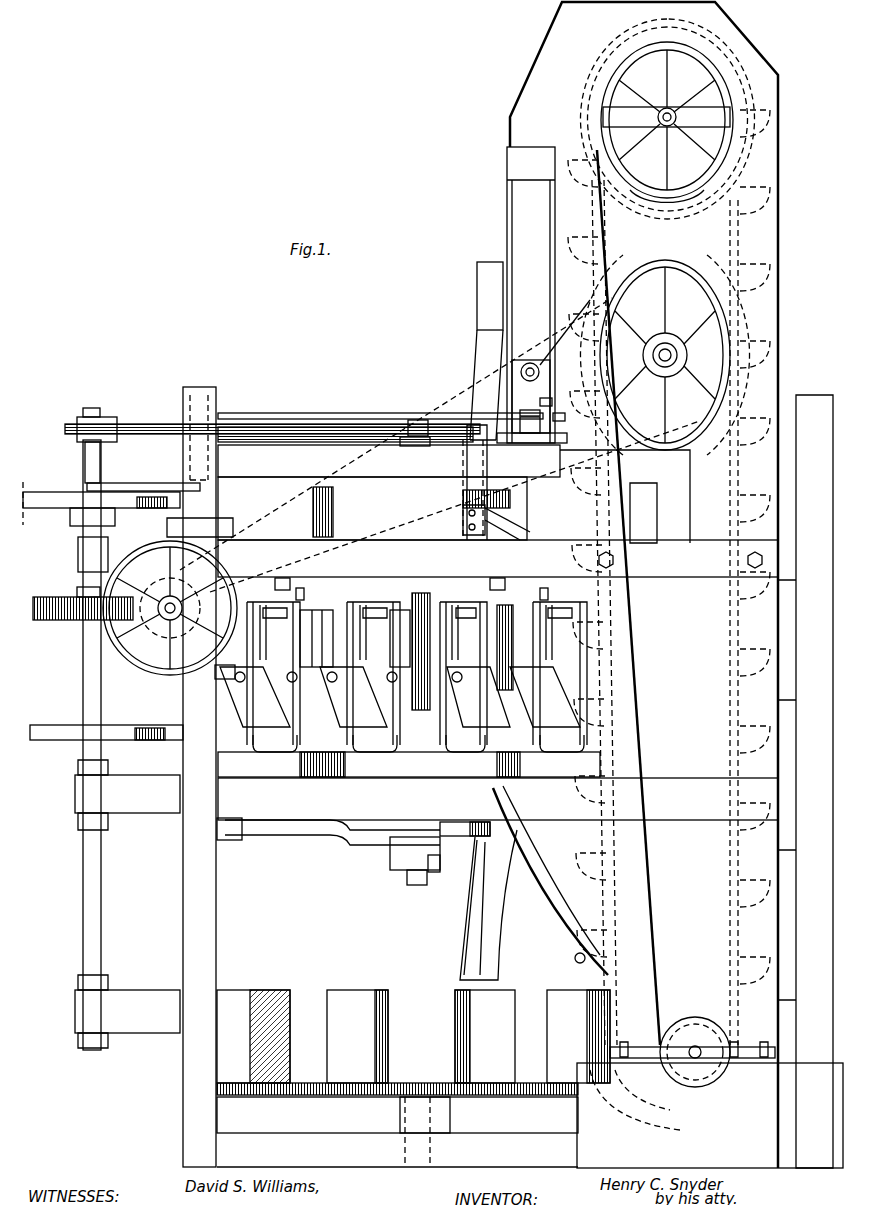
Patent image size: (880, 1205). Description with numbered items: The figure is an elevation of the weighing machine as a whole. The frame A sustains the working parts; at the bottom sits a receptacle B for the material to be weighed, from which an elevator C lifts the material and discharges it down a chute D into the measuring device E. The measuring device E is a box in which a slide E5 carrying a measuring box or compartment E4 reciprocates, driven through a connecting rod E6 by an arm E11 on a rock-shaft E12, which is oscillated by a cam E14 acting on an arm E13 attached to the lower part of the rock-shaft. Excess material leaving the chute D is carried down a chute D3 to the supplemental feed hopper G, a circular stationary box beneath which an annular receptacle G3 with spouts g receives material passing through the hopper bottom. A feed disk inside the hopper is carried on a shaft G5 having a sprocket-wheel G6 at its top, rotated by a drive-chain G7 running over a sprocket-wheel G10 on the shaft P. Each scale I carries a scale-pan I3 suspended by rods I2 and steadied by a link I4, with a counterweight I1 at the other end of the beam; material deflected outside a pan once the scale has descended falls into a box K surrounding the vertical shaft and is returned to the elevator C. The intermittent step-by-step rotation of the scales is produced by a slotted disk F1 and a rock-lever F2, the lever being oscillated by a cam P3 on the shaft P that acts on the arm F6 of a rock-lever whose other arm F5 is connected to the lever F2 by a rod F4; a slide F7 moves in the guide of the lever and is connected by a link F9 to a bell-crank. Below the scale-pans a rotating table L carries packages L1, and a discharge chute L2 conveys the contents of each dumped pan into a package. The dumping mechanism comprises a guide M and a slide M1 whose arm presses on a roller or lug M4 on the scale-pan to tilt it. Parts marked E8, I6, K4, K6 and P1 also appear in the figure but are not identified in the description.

The frame A is at (175, 888).
The receptacle B is at (710, 1092).
The elevator C is at (669, 526).
The chute D is at (531, 295).
The chute D3 is at (485, 296).
The measuring device E is at (512, 395).
The measuring box E4 is at (529, 411).
The slide E5 is at (565, 418).
The connecting rod E6 is at (552, 400).
The gear E8 is at (555, 340).
The arm E11 is at (380, 412).
The rock-shaft E12 is at (190, 425).
The arm E13 is at (150, 484).
The cam E14 is at (68, 500).
The slotted disk F1 is at (440, 822).
The rock-lever F2 is at (390, 845).
The rod F4 is at (310, 835).
The arm F5 is at (222, 845).
The arm F6 is at (148, 726).
The slide F7 is at (410, 875).
The link F9 is at (432, 872).
The supplemental feed hopper G is at (440, 445).
The annular receptacle G3 is at (530, 525).
The shaft G5 is at (415, 437).
The sprocket-wheel G6 is at (412, 420).
The drive-chain G7 is at (316, 426).
The sprocket-wheel G10 is at (105, 418).
The spout g is at (296, 592).
The scale I is at (417, 673).
The counterweight I1 is at (406, 647).
The rod I2 is at (413, 633).
The scale pan I3 is at (655, 718).
The link I4 is at (418, 754).
The stop I6 is at (221, 674).
The box K is at (409, 685).
The roller K4 is at (409, 682).
The curved arm K6 is at (548, 858).
The rotating table L is at (428, 1086).
The package L1 is at (413, 1036).
The discharge chute L2 is at (498, 952).
The guide M is at (334, 684).
The slide M1 is at (150, 672).
The roller M4 is at (260, 684).
The shaft P is at (82, 693).
The shaft P1 is at (66, 622).
The cam P3 is at (75, 770).